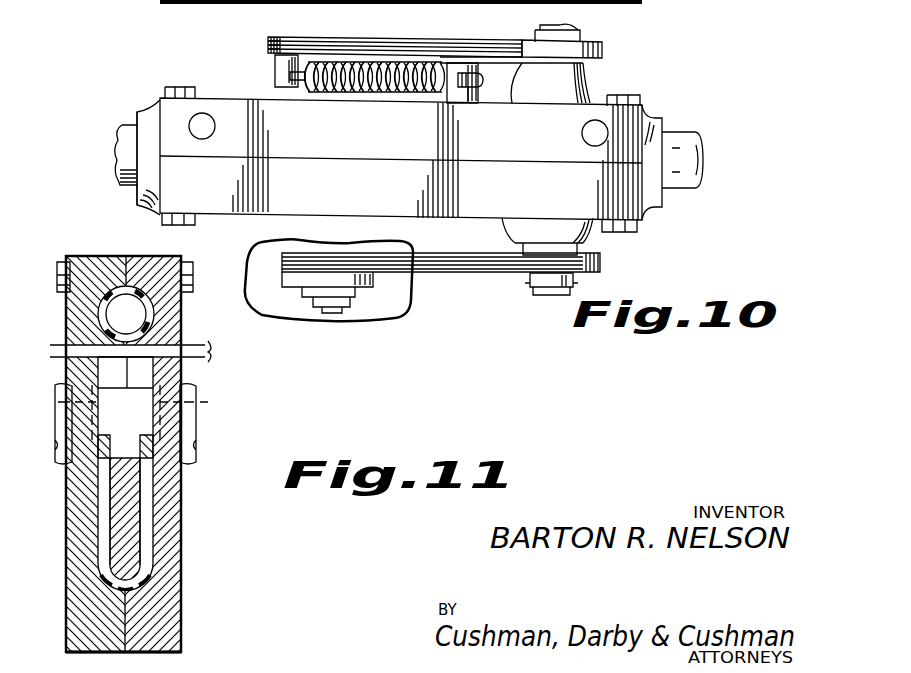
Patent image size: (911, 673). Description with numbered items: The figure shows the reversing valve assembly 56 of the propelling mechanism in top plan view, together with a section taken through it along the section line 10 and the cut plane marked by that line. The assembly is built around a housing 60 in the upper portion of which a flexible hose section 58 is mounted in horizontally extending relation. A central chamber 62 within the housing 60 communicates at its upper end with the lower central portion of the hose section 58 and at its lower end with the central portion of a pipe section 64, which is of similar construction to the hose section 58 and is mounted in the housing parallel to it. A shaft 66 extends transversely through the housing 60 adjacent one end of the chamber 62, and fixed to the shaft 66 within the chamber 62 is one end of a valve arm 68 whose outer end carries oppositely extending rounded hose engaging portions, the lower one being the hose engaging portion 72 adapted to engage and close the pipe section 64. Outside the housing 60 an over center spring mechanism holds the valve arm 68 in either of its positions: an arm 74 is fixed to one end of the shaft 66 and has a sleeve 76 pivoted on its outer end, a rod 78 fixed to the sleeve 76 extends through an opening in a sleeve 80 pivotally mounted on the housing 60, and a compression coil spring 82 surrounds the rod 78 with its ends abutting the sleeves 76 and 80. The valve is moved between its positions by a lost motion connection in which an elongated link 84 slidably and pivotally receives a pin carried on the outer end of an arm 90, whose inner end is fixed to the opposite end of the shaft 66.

In FIG. 10, the section line 10 is at (370, 96).
In FIG. 10, the reversing valve assembly 56 is at (648, 104).
In FIG. 11, the reversing valve assembly 56 is at (72, 252).
In FIG. 10, the flexible hose section 58 is at (132, 122).
In FIG. 11, the flexible hose section 58 is at (150, 308).
In FIG. 10, the housing 60 is at (396, 193).
In FIG. 11, the housing 60 is at (168, 592).
In FIG. 11, the central chamber 62 is at (150, 478).
In FIG. 11, the pipe section 64 is at (150, 556).
In FIG. 10, the shaft 66 is at (558, 38).
In FIG. 11, the shaft 66 is at (197, 409).
In FIG. 11, the valve arm 68 is at (110, 478).
In FIG. 11, the hose engaging portion 72 is at (105, 585).
In FIG. 10, the arm 74 is at (440, 48).
In FIG. 10, the sleeve 76 is at (268, 72).
In FIG. 10, the rod 78 is at (484, 62).
In FIG. 10, the sleeve 80 is at (475, 88).
In FIG. 10, the compression coil spring 82 is at (412, 93).
In FIG. 10, the elongated link 84 is at (374, 287).
In FIG. 10, the arm 90 is at (478, 272).